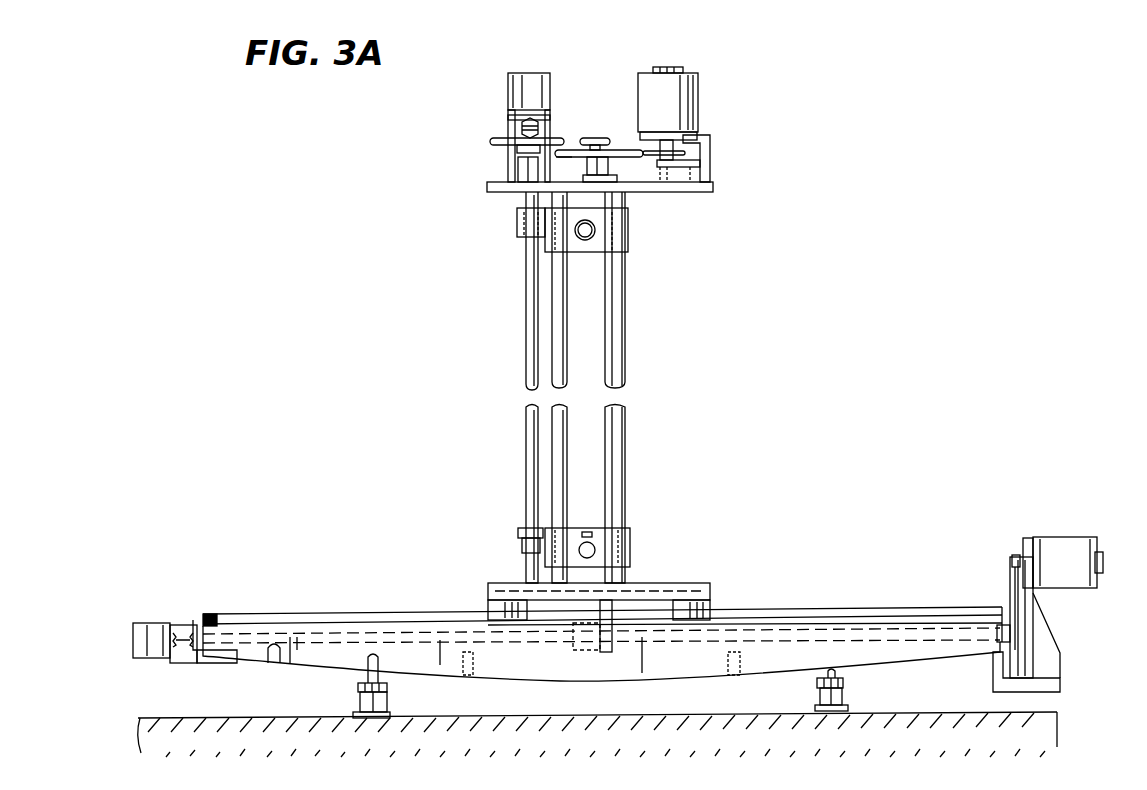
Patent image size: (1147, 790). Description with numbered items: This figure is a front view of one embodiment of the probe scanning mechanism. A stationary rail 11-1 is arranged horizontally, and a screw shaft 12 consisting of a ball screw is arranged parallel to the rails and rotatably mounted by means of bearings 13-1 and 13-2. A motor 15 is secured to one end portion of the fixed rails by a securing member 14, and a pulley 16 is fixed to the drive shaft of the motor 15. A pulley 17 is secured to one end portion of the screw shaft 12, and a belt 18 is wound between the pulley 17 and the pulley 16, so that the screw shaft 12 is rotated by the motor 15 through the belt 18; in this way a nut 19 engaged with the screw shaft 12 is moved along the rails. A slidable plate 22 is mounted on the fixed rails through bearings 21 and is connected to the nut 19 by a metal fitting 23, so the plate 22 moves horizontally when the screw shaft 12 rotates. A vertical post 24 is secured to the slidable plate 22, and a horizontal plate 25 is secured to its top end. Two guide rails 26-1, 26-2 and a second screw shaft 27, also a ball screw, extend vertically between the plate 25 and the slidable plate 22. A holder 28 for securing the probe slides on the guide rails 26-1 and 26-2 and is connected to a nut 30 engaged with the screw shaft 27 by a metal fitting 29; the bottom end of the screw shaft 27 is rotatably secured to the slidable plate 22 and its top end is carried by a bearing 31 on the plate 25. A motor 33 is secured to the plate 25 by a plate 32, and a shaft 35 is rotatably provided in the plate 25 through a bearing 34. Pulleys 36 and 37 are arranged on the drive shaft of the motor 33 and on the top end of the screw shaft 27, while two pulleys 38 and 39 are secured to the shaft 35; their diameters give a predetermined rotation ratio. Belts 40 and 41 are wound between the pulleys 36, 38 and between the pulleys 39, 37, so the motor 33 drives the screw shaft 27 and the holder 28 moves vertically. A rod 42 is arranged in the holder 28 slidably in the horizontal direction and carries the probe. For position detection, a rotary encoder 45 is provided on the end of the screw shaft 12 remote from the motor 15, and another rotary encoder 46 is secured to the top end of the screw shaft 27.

The stationary rail 11-1 is at (868, 612).
The screw shaft 12 is at (272, 656).
The bearing 13-1 is at (208, 628).
The bearing 13-2 is at (998, 623).
The securing member 14 is at (1048, 645).
The motor 15 is at (1057, 543).
The pulley 16 is at (1012, 560).
The pulley 17 is at (1008, 662).
The belt 18 is at (1013, 580).
The nut 19 is at (588, 643).
The bearings 21 is at (498, 612).
The slidable plate 22 is at (697, 587).
The metal fitting 23 is at (608, 620).
The vertical post 24 is at (625, 360).
The horizontal plate 25 is at (712, 188).
The guide rail 26-1 is at (557, 283).
The guide rail 26-2 is at (613, 295).
The screw shaft 27 is at (530, 325).
The holder 28 is at (595, 532).
The metal fitting 29 is at (522, 528).
The nut 30 is at (522, 545).
The bearing 31 is at (518, 168).
The plate 32 is at (706, 140).
The motor 33 is at (687, 92).
The bearing 34 is at (607, 167).
The shaft 35 is at (606, 139).
The pulley 36 is at (707, 162).
The pulley 37 is at (500, 137).
The pulley 38 is at (572, 158).
The pulley 39 is at (596, 141).
The belt 40 is at (613, 230).
The belt 41 is at (578, 149).
The rod 42 is at (597, 550).
The rotary encoder 45 is at (150, 628).
The rotary encoder 46 is at (515, 75).